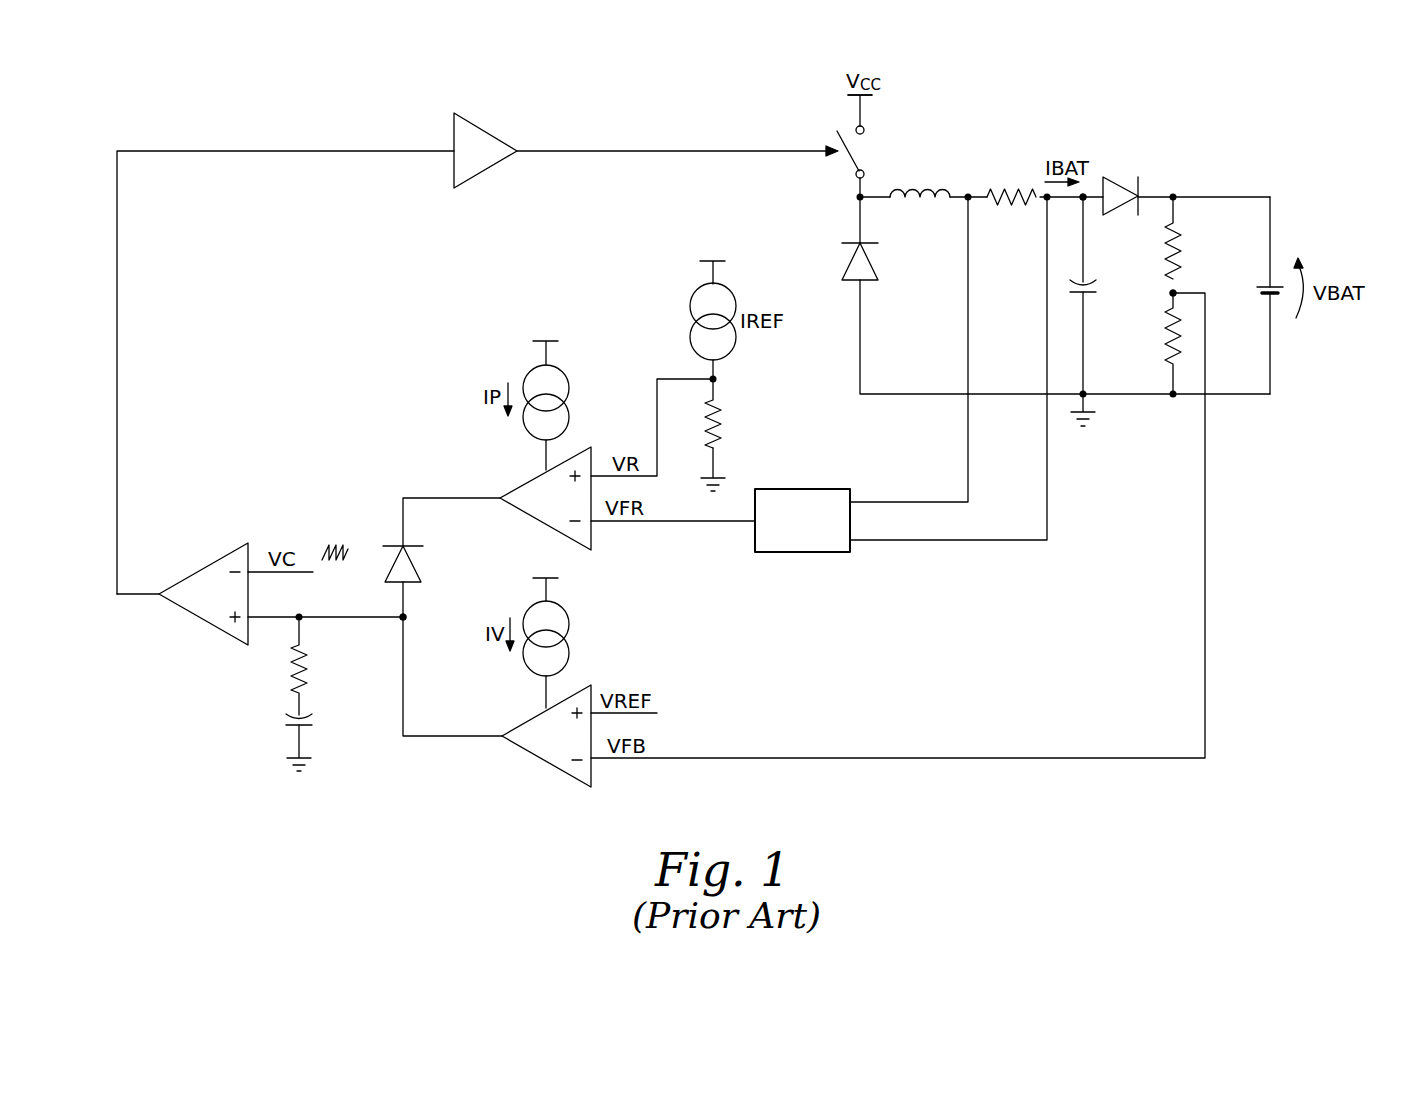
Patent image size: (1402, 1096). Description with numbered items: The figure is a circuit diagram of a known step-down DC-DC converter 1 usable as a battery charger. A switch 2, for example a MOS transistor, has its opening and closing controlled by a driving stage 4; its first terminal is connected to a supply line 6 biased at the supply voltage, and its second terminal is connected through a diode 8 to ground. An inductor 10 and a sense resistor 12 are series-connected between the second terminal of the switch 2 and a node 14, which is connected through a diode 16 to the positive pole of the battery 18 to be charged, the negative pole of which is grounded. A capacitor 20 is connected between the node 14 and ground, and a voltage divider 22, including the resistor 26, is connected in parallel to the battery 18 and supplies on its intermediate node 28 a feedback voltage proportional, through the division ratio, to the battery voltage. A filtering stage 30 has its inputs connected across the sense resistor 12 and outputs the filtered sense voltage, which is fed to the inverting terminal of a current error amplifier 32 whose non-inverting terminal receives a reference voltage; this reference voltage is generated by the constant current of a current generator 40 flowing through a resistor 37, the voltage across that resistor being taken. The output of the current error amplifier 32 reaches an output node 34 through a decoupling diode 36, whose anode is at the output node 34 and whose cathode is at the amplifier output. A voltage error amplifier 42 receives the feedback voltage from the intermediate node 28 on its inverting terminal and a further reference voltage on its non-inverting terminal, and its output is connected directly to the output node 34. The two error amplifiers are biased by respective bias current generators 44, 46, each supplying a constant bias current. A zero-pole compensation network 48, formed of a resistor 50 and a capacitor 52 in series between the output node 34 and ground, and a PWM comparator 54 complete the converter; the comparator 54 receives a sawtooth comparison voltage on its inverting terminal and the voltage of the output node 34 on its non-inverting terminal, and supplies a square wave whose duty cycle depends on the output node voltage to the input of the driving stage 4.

The DC-DC converter 1 is at (1288, 110).
The switch 2 is at (850, 150).
The driving stage 4 is at (490, 130).
The supply line 6 is at (848, 96).
The diode 8 is at (872, 262).
The inductor 10 is at (930, 190).
The sense resistor 12 is at (1000, 207).
The node 14 is at (1085, 192).
The diode 16 is at (1120, 180).
The battery 18 is at (1264, 284).
The capacitor 20 is at (1168, 254).
The voltage divider 22 is at (1182, 270).
The resistor 26 is at (1167, 346).
The intermediate node 28 is at (1172, 295).
The filtering stage 30 is at (755, 536).
The current error amplifier 32 is at (546, 526).
The output node 34 is at (406, 619).
The decoupling diode 36 is at (414, 560).
The resistor 37 is at (720, 422).
The current generator 40 is at (696, 320).
The voltage error amplifier 42 is at (546, 764).
The bias current generator 44 is at (565, 400).
The bias current generator 46 is at (566, 637).
The zero-pole compensation network 48 is at (262, 696).
The resistor 50 is at (308, 665).
The capacitor 52 is at (306, 727).
The PWM comparator 54 is at (204, 621).